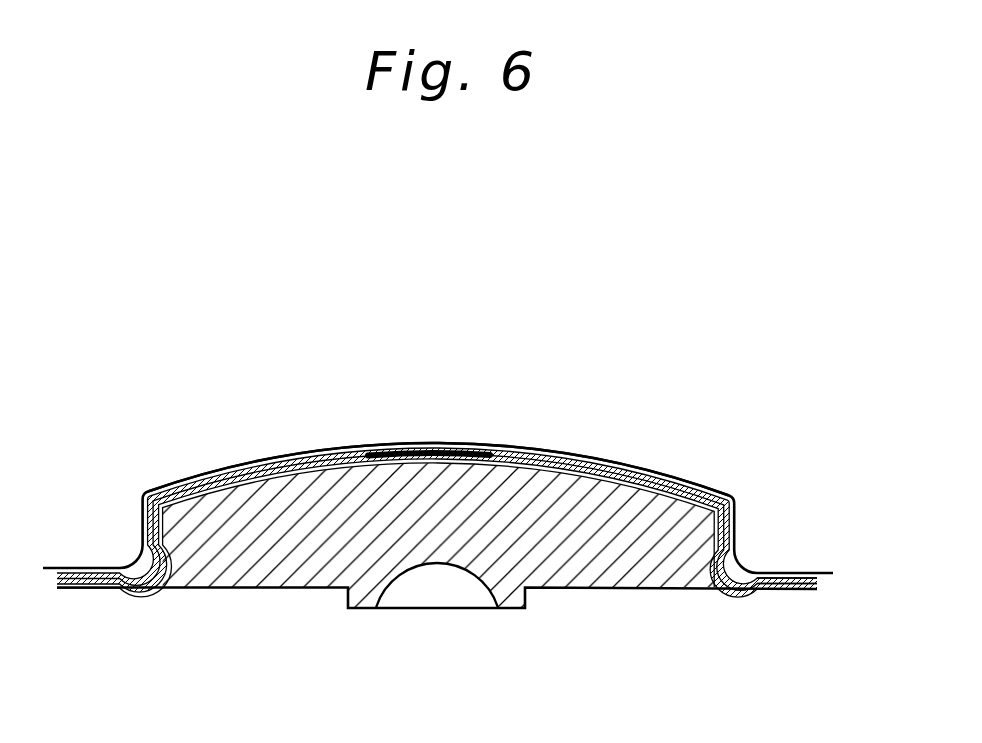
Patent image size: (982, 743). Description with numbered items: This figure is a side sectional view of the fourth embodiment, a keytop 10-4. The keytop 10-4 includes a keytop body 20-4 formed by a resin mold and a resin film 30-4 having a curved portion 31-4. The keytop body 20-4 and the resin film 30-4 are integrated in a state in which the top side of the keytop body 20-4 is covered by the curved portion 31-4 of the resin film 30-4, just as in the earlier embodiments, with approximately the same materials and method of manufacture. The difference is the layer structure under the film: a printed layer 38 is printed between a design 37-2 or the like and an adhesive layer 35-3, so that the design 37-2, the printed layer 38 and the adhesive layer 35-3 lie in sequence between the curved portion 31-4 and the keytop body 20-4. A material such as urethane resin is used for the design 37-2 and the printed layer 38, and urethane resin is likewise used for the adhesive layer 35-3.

The keytop 10-4 is at (541, 449).
The keytop body 20-4 is at (255, 515).
The resin film 30-4 is at (786, 572).
The curved portion 31-4 is at (649, 469).
The adhesive layer 35-3 is at (334, 460).
The design 37-2 is at (407, 451).
The printed layer 38 is at (287, 467).